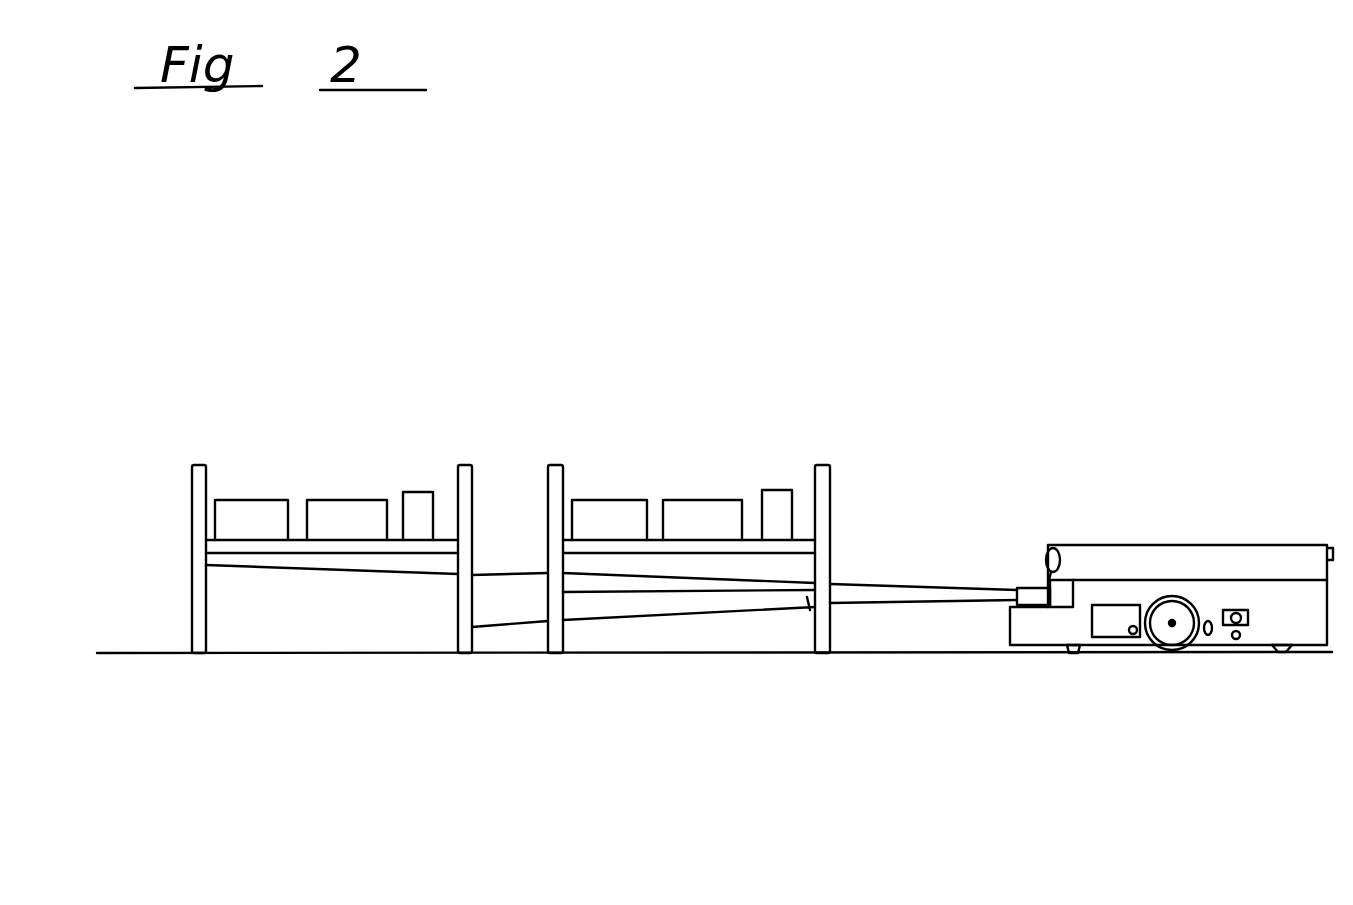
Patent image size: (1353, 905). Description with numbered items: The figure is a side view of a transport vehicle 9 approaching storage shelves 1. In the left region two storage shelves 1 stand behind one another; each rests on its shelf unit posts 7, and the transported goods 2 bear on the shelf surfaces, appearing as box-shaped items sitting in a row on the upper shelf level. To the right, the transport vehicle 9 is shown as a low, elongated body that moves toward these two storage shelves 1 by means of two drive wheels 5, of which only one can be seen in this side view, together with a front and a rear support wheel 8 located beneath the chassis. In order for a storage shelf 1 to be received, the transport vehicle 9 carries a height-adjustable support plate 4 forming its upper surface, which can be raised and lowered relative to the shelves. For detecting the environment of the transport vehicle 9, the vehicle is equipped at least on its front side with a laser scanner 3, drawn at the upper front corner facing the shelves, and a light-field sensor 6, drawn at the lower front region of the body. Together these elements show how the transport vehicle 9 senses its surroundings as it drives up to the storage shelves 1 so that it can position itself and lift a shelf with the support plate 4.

The storage shelf 1 is at (443, 547).
The transported goods 2 is at (717, 512).
The laser scanner 3 is at (1017, 586).
The height-adjustable support plate 4 is at (1232, 545).
The drive wheel 5 is at (1173, 647).
The light-field sensor 6 is at (1007, 628).
The shelf unit post 7 is at (825, 627).
The support wheel 8 is at (1277, 647).
The transport vehicle 9 is at (1310, 620).